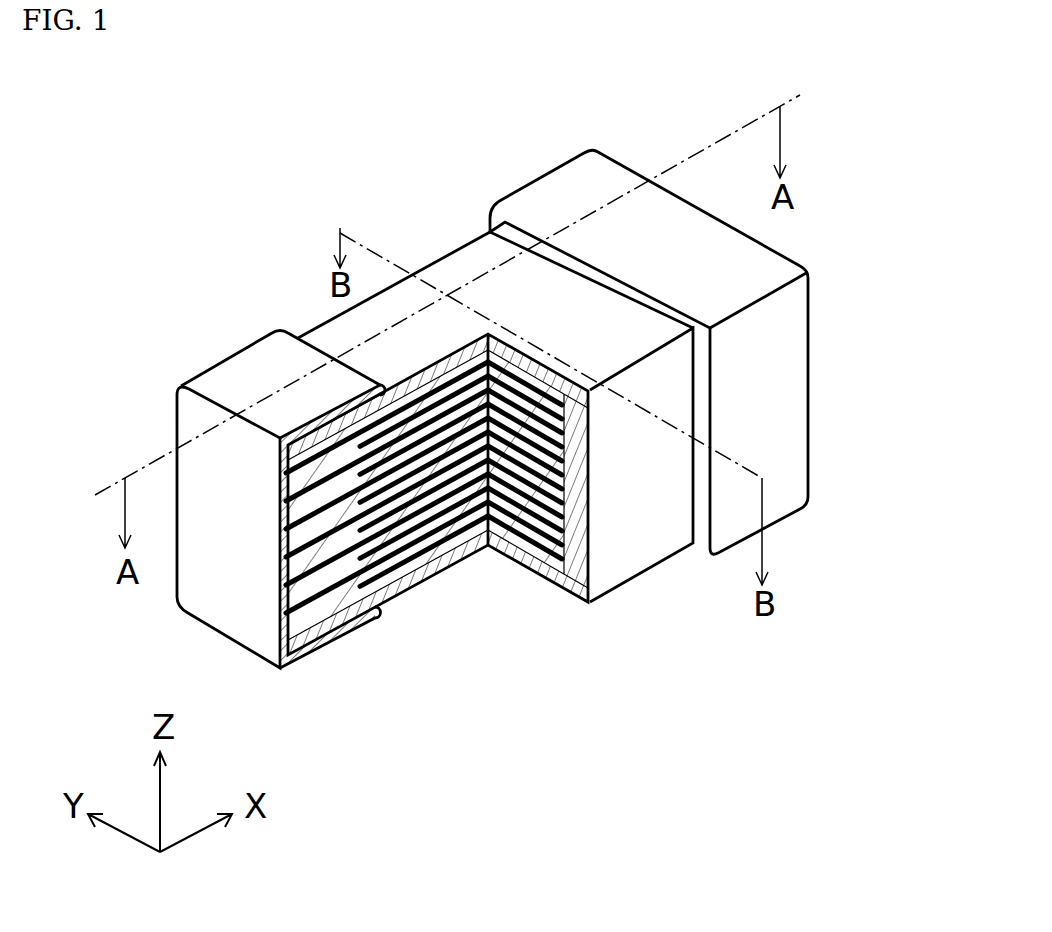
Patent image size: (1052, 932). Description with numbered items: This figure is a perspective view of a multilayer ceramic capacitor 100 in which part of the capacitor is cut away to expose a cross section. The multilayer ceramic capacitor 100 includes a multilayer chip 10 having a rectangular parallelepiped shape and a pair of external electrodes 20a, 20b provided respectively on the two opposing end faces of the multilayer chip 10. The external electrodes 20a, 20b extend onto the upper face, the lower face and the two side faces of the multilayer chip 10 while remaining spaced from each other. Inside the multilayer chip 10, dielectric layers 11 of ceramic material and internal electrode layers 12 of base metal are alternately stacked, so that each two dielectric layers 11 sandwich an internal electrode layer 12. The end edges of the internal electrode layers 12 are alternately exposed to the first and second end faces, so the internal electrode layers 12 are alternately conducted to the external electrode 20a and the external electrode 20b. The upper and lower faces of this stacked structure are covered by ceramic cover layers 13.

The multilayer ceramic capacitor 100 is at (912, 80).
The multilayer chip 10 is at (454, 458).
The dielectric layer 11 is at (420, 533).
The internal electrode layer 12 is at (457, 500).
The cover layer 13 is at (455, 268).
The external electrode 20a is at (205, 360).
The external electrode 20b is at (547, 192).